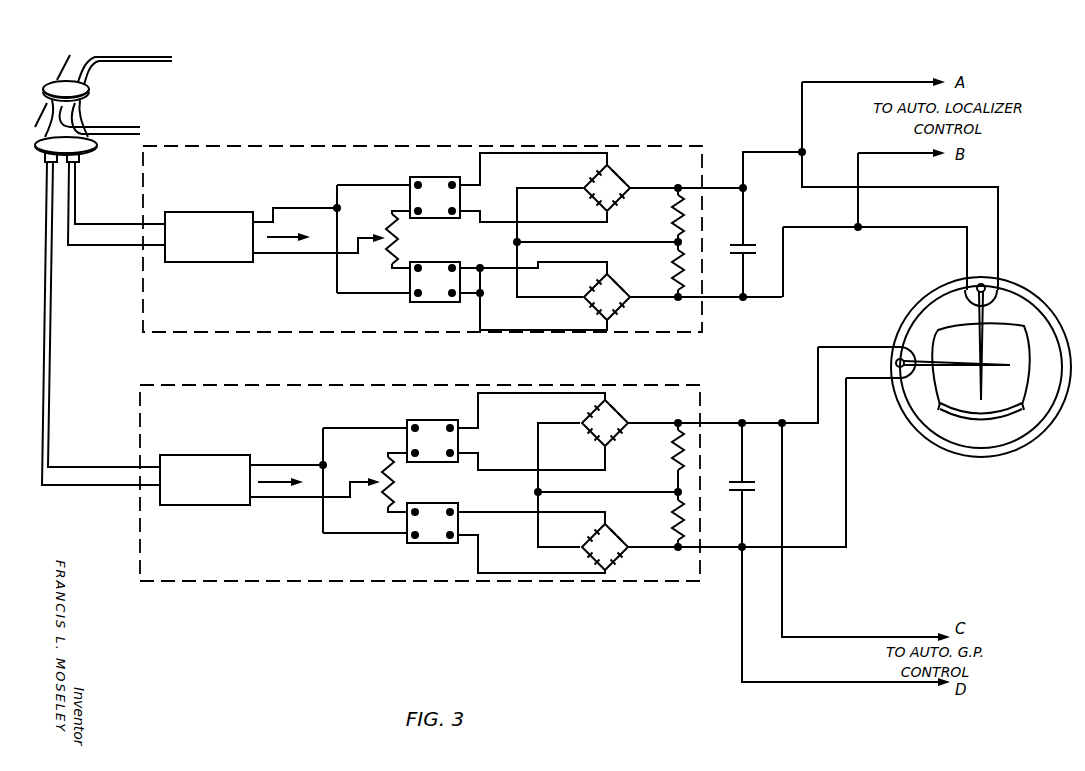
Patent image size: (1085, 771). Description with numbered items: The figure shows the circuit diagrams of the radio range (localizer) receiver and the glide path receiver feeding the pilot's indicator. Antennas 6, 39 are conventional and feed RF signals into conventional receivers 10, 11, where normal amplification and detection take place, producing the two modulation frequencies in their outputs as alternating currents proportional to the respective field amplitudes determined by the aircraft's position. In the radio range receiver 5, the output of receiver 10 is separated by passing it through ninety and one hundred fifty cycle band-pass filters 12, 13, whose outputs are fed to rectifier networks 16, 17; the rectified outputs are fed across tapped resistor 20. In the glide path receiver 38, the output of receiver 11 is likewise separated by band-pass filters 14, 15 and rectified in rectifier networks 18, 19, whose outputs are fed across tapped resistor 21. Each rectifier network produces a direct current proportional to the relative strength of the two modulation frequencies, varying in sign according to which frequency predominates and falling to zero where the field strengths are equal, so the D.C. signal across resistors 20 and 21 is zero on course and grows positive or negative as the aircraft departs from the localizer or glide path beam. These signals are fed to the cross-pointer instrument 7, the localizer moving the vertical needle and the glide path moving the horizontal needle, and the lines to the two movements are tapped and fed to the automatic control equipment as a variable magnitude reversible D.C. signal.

The antenna 39 is at (45, 82).
The antenna 6 is at (115, 60).
The radio range receiver 5 is at (215, 146).
The receiver 10 is at (207, 212).
The 90 cycle band-pass filter 12 is at (437, 177).
The 150 cycle band-pass filter 13 is at (428, 302).
The rectifier network 16 is at (615, 172).
The rectifier network 17 is at (613, 320).
The tapped resistor 20 is at (672, 216).
The receiver 11 is at (195, 455).
The 90 cycle band-pass filter 14 is at (415, 420).
The 150 cycle band-pass filter 15 is at (435, 543).
The rectifier network 18 is at (615, 407).
The rectifier network 19 is at (612, 566).
The tapped resistor 21 is at (672, 463).
The glide path receiver 38 is at (183, 581).
The cross-pointer instrument 7 is at (1008, 284).